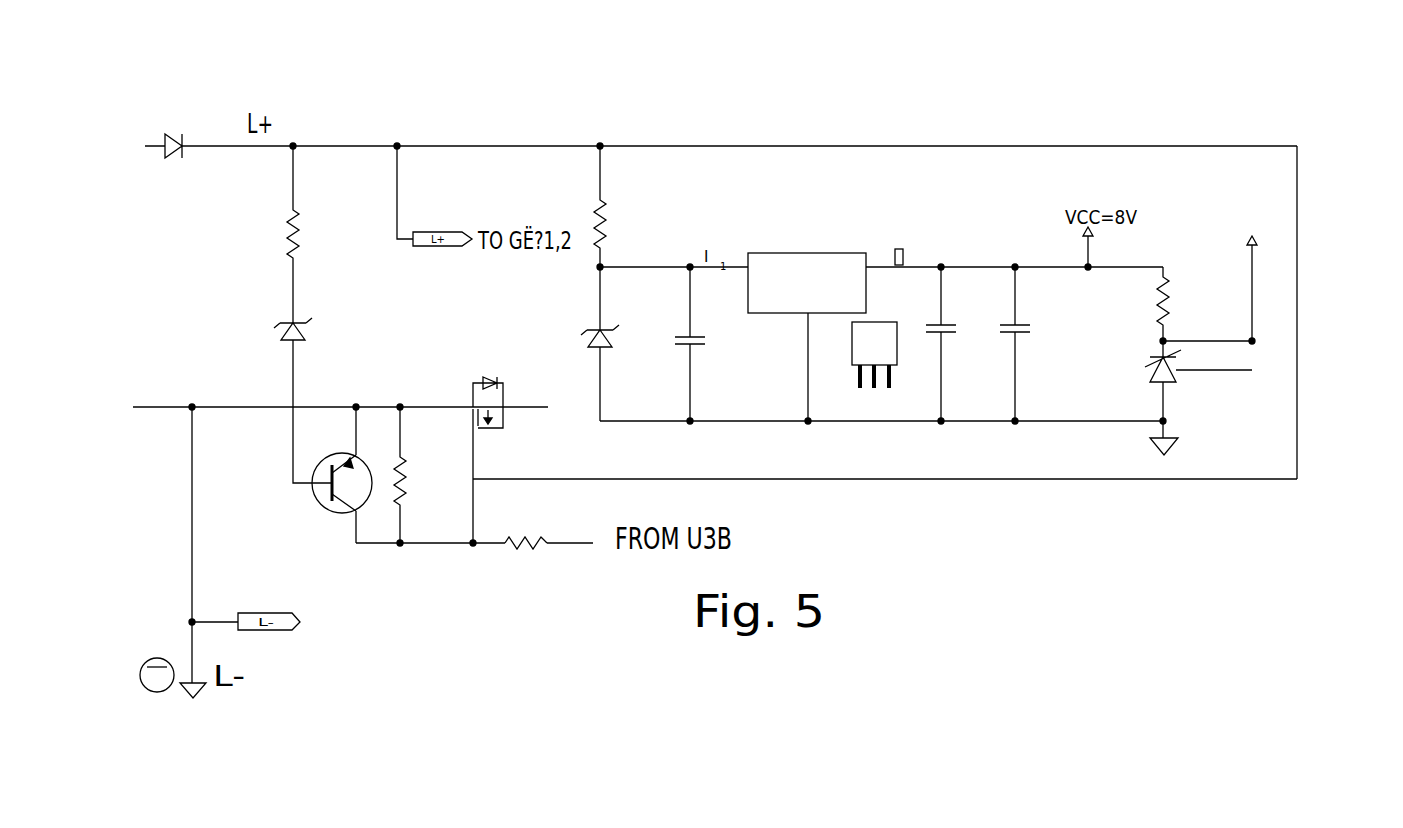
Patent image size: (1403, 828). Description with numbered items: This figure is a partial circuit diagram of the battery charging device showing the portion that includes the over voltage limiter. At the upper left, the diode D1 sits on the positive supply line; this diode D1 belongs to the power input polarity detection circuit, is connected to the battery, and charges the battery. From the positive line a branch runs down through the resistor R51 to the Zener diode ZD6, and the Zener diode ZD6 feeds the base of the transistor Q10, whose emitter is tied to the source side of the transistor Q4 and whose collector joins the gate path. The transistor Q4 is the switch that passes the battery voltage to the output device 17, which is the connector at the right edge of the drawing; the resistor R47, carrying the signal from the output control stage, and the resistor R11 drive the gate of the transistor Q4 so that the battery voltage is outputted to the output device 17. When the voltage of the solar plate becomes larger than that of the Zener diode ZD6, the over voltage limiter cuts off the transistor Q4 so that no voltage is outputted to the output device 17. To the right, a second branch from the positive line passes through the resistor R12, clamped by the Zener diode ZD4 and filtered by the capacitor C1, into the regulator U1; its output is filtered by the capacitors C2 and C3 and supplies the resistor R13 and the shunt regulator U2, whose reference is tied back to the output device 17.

The output device 17 is at (1343, 282).
The diode D1 is at (160, 161).
The resistor R51 is at (311, 234).
The Zener diode ZD6 is at (314, 400).
The transistor Q10 is at (345, 491).
The resistor R11 is at (419, 475).
The transistor Q4 is at (488, 430).
The resistor R47 is at (526, 542).
The resistor R12 is at (642, 206).
The zener diode ZD4 is at (619, 344).
The capacitor C1 is at (717, 344).
The voltage regulator U1 is at (816, 326).
The capacitor C2 is at (953, 344).
The capacitor C3 is at (1048, 344).
The resistor R13 is at (1181, 312).
The shunt regulator U2 is at (1196, 397).